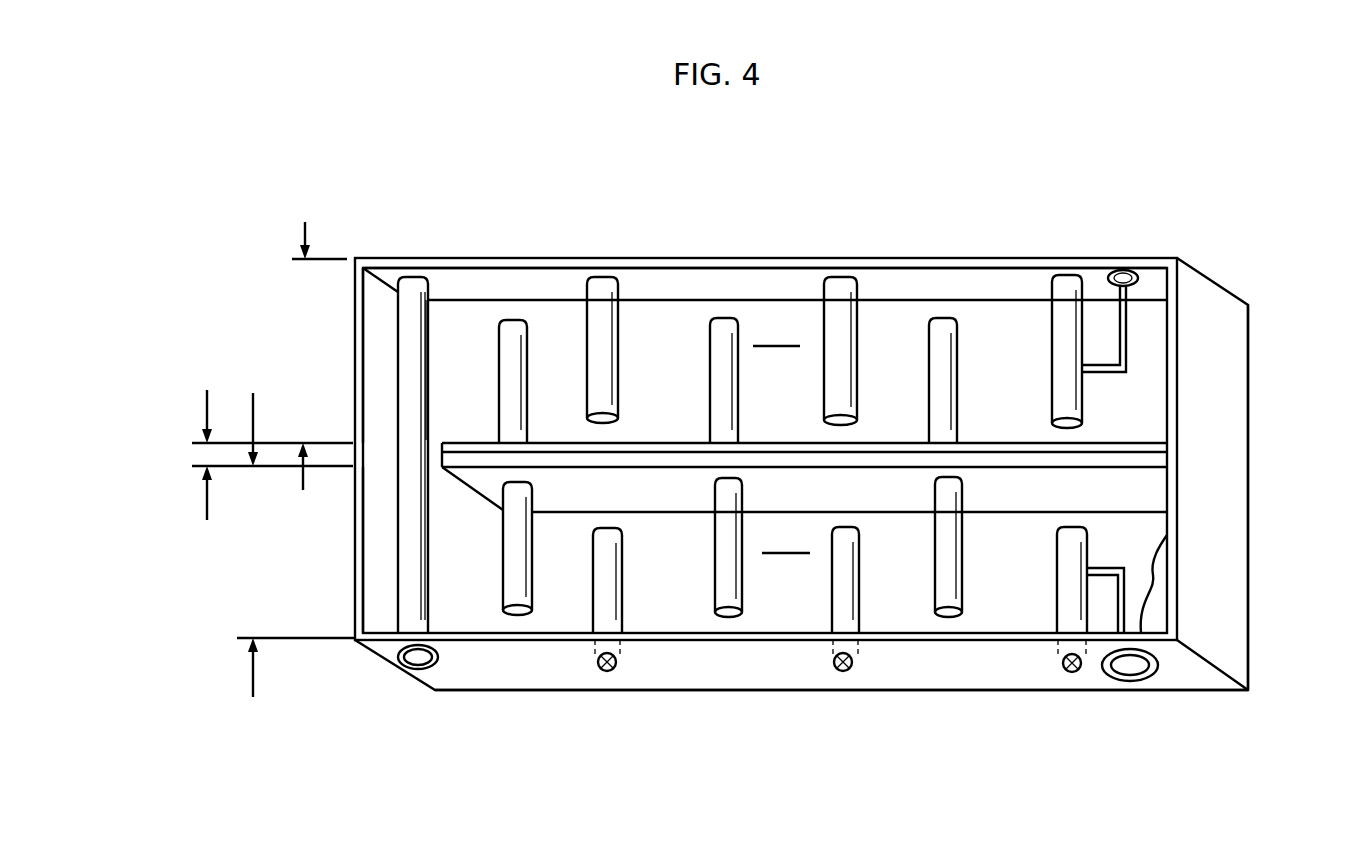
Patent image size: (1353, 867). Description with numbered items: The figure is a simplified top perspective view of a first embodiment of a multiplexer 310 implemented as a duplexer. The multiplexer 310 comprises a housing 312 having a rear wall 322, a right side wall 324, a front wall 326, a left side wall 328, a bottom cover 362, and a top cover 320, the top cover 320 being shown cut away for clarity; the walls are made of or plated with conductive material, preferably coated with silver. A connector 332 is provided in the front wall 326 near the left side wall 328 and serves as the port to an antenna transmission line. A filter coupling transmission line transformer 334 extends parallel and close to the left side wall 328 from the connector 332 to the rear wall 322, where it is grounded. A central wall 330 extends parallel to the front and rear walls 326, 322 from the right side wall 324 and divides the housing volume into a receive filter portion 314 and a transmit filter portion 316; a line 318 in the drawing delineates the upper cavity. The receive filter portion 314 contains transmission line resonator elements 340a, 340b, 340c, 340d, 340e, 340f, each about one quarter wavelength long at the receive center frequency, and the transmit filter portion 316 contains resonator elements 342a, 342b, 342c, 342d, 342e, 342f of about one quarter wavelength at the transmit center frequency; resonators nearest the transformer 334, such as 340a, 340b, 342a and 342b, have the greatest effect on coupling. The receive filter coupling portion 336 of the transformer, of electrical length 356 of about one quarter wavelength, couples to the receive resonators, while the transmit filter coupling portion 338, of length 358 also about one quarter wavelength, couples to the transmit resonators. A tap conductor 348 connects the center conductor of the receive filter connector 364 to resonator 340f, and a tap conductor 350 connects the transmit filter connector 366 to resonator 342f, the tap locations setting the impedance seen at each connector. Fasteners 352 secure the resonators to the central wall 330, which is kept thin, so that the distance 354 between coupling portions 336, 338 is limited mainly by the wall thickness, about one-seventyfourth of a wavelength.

The multiplexer 310 is at (498, 186).
The housing 312 is at (1220, 278).
The receive filter portion 314 is at (779, 332).
The transmit filter portion 316 is at (788, 538).
The upper rear wall 318 is at (668, 322).
The top cover 320 is at (1158, 608).
The rear wall 322 is at (797, 275).
The right side wall 324 is at (1223, 362).
The front wall 326 is at (943, 675).
The left side wall 328 is at (380, 295).
The central wall 330 is at (1140, 442).
The connector 332 is at (418, 657).
The filter coupling transmission line transformer 334 is at (440, 322).
The receive filter coupling portion 336 is at (363, 380).
The transmit filter coupling portion 338 is at (363, 525).
The transmission line resonator element 340a is at (527, 343).
The transmission line resonator element 340b is at (618, 340).
The transmission line resonator element 340c is at (738, 345).
The transmission line resonator element 340d is at (857, 335).
The transmission line resonator element 340e is at (958, 360).
The transmission line resonator element 340f is at (1082, 393).
The transmission line resonator element 342a is at (503, 567).
The transmission line resonator element 342b is at (618, 577).
The transmission line resonator element 342c is at (742, 578).
The transmission line resonator element 342d is at (860, 612).
The transmission line resonator element 342e is at (962, 575).
The transmission line resonator element 342f is at (1087, 548).
The tap conductor 348 is at (1125, 320).
The tap conductor 350 is at (1123, 592).
The fastener 352 is at (607, 672).
The distance 354 is at (207, 395).
The electrical length 356 is at (305, 225).
The length 358 is at (253, 690).
The bottom cover 362 is at (972, 308).
The connector 364 is at (1123, 270).
The connector 366 is at (1130, 668).